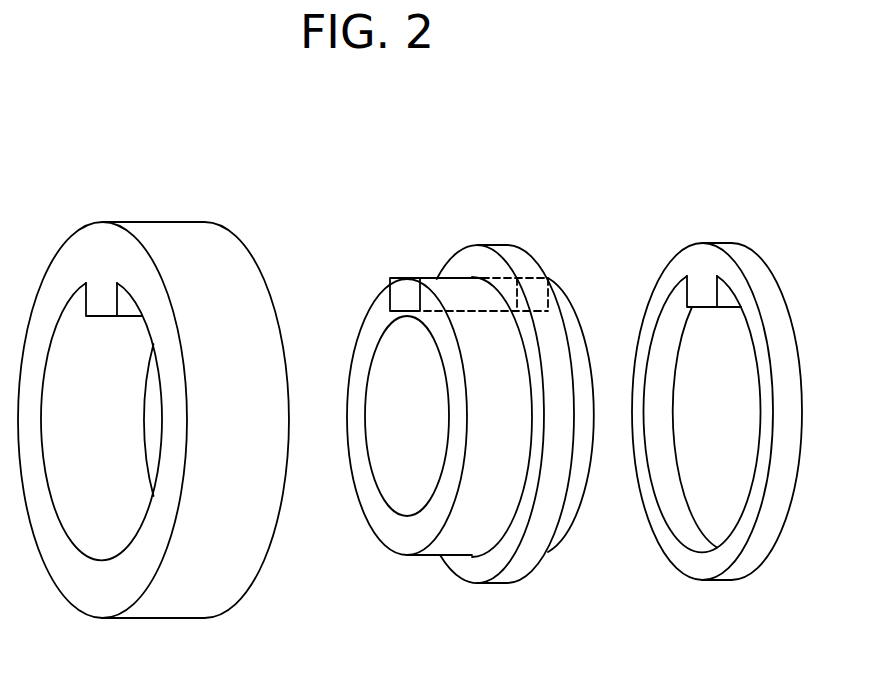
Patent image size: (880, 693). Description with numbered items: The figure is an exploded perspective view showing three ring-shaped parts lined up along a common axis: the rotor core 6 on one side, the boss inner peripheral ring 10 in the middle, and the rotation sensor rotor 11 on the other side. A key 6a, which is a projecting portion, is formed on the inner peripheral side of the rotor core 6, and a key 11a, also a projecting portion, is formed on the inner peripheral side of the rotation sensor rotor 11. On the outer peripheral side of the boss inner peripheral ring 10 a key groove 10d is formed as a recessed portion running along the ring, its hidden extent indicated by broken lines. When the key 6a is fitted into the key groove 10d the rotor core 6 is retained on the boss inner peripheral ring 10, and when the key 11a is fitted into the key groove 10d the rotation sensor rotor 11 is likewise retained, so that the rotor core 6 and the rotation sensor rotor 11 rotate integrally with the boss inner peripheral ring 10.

The rotor core 6 is at (63, 268).
The key 6a is at (105, 302).
The boss inner peripheral ring 10 is at (373, 316).
The key groove 10d is at (405, 293).
The rotation sensor rotor 11 is at (667, 279).
The key 11a is at (703, 292).